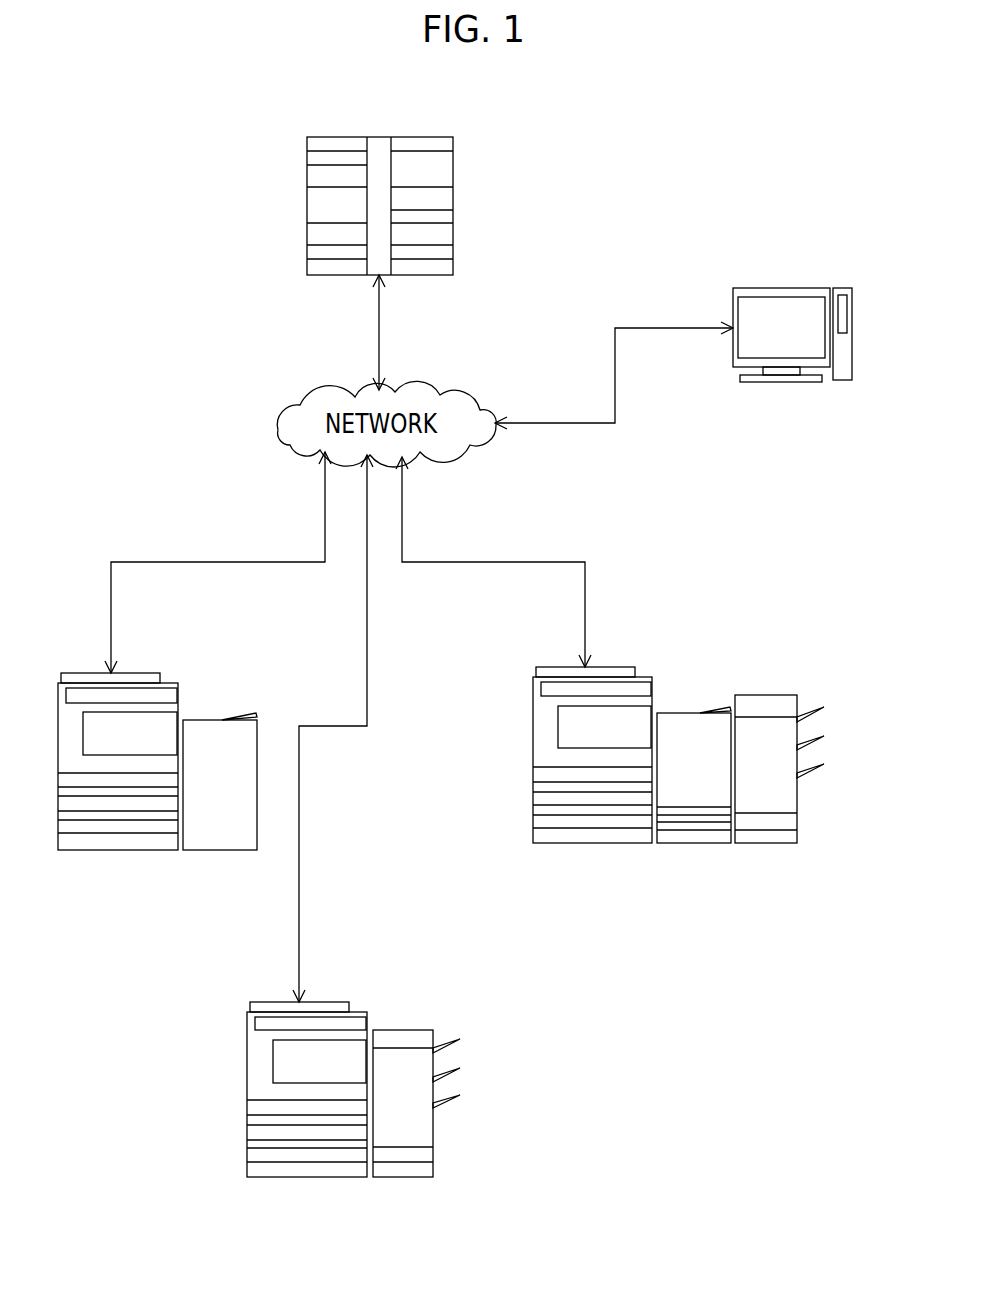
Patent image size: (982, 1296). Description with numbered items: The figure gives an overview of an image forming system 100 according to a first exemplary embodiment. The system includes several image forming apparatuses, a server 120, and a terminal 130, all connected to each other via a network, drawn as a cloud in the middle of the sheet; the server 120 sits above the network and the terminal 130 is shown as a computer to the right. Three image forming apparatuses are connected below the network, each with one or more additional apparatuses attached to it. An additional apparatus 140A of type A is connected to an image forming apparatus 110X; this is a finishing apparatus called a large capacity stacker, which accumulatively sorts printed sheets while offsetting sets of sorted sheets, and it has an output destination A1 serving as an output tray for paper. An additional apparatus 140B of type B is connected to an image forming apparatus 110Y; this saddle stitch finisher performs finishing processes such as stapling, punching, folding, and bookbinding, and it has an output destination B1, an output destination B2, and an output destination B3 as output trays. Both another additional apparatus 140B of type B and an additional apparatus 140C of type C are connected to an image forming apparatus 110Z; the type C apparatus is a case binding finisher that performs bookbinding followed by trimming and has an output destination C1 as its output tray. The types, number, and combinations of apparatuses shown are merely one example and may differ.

The image forming system 100 is at (768, 170).
The server 120 is at (322, 137).
The terminal 130 is at (785, 288).
The image forming apparatus 110X is at (117, 850).
The image forming apparatus 110Y is at (305, 1177).
The image forming apparatus 110Z is at (588, 843).
The additional apparatus of type A 140A is at (222, 780).
The additional apparatus of type B 140B is at (623, 943).
The additional apparatus of type C 140C is at (697, 773).
The output destination A1 is at (237, 715).
The output destination B1 is at (812, 713).
The output destination B2 is at (824, 741).
The output destination B3 is at (816, 777).
The output destination C1 is at (711, 709).